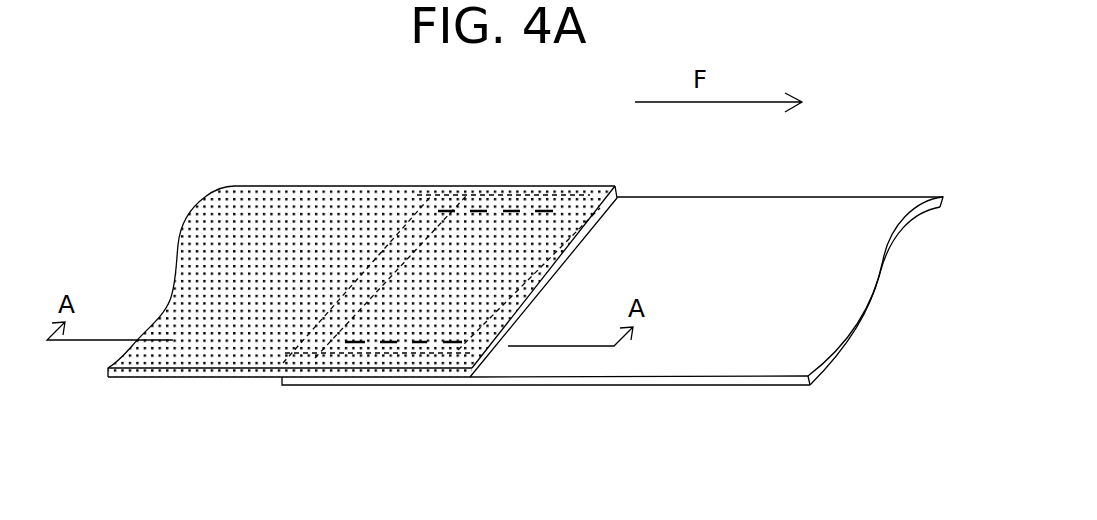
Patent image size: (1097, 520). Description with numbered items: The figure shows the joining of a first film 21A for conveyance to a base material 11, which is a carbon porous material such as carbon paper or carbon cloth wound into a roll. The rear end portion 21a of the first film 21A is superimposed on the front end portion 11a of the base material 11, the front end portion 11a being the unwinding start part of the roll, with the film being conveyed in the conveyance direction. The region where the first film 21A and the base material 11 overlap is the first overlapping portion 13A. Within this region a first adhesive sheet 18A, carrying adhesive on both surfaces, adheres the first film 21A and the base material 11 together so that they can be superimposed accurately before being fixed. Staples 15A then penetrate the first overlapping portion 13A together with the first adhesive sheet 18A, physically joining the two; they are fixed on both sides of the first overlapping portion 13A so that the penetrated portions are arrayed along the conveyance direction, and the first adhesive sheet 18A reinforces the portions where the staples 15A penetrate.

The base material 11 is at (343, 192).
The front end portion 11a is at (592, 183).
The first overlapping portion 13A is at (543, 258).
The staples 15A is at (545, 210).
The first adhesive sheet 18A is at (586, 217).
The first film 21A is at (835, 208).
The rear end portion 21a is at (293, 382).